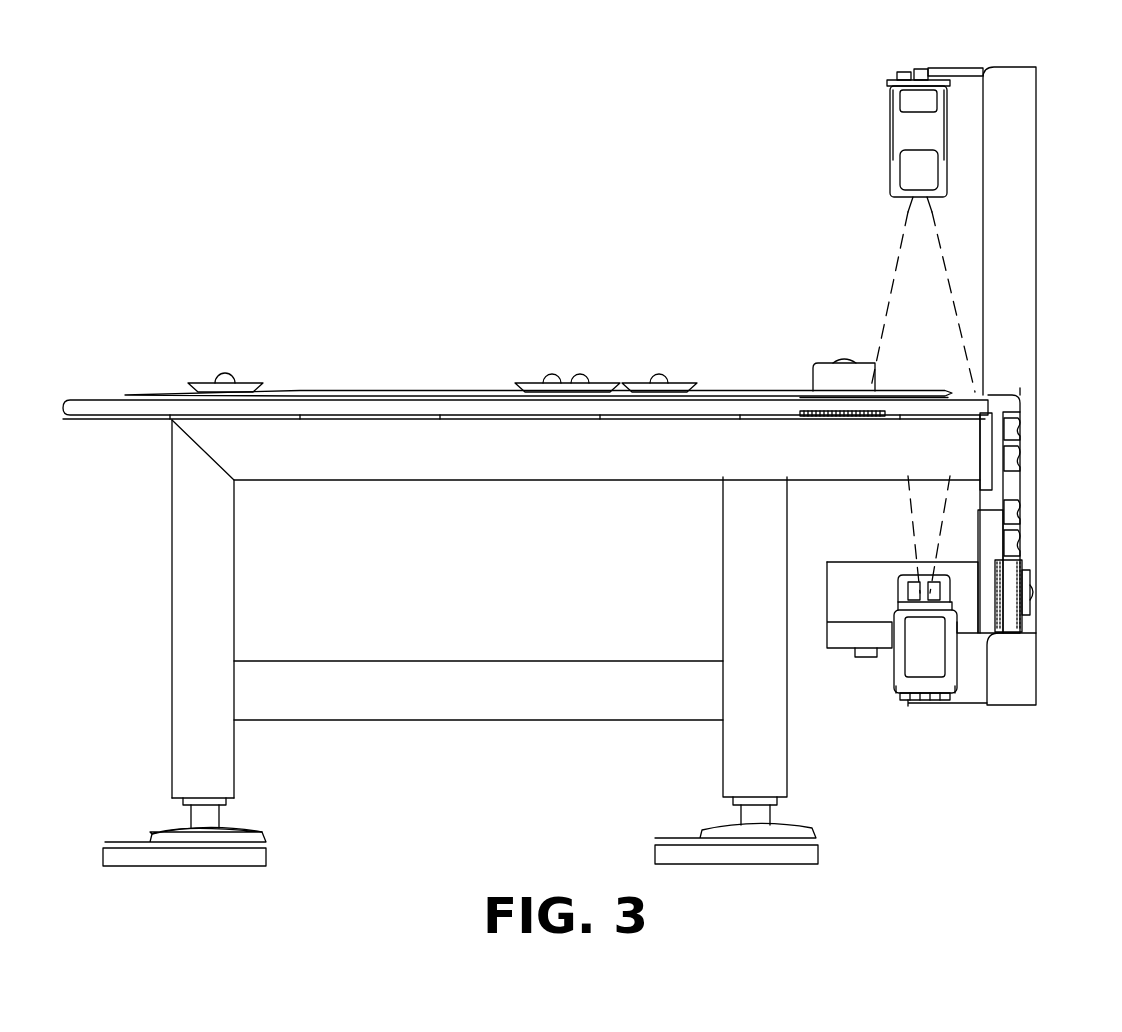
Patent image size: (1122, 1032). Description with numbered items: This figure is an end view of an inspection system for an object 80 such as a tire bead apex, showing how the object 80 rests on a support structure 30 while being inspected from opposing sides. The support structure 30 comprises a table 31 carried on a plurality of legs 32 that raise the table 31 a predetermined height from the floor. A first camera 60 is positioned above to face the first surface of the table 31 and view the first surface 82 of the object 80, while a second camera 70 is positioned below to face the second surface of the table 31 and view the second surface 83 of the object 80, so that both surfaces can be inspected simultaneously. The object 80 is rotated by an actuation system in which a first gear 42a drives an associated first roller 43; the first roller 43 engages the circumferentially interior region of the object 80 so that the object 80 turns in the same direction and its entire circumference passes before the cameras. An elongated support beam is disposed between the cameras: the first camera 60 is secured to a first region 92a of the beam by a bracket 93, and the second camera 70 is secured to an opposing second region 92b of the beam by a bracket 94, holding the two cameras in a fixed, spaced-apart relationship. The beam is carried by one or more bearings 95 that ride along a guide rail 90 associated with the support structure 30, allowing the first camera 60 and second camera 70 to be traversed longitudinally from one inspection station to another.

The support structure 30 is at (95, 396).
The table 31 is at (181, 445).
The legs 32 is at (228, 767).
The first gear 42a is at (838, 426).
The first roller 43 is at (822, 375).
The first camera 60 is at (878, 126).
The second camera 70 is at (882, 706).
The object 80 is at (402, 387).
The first surface 82 is at (917, 391).
The second surface 83 is at (920, 400).
The guide rail 90 is at (1005, 480).
The first region of the elongated support beam 92a is at (1015, 82).
The second region of the elongated support beam 92b is at (1020, 700).
The bracket 93 is at (962, 68).
The bracket 94 is at (958, 704).
The bearings 95 is at (1022, 450).